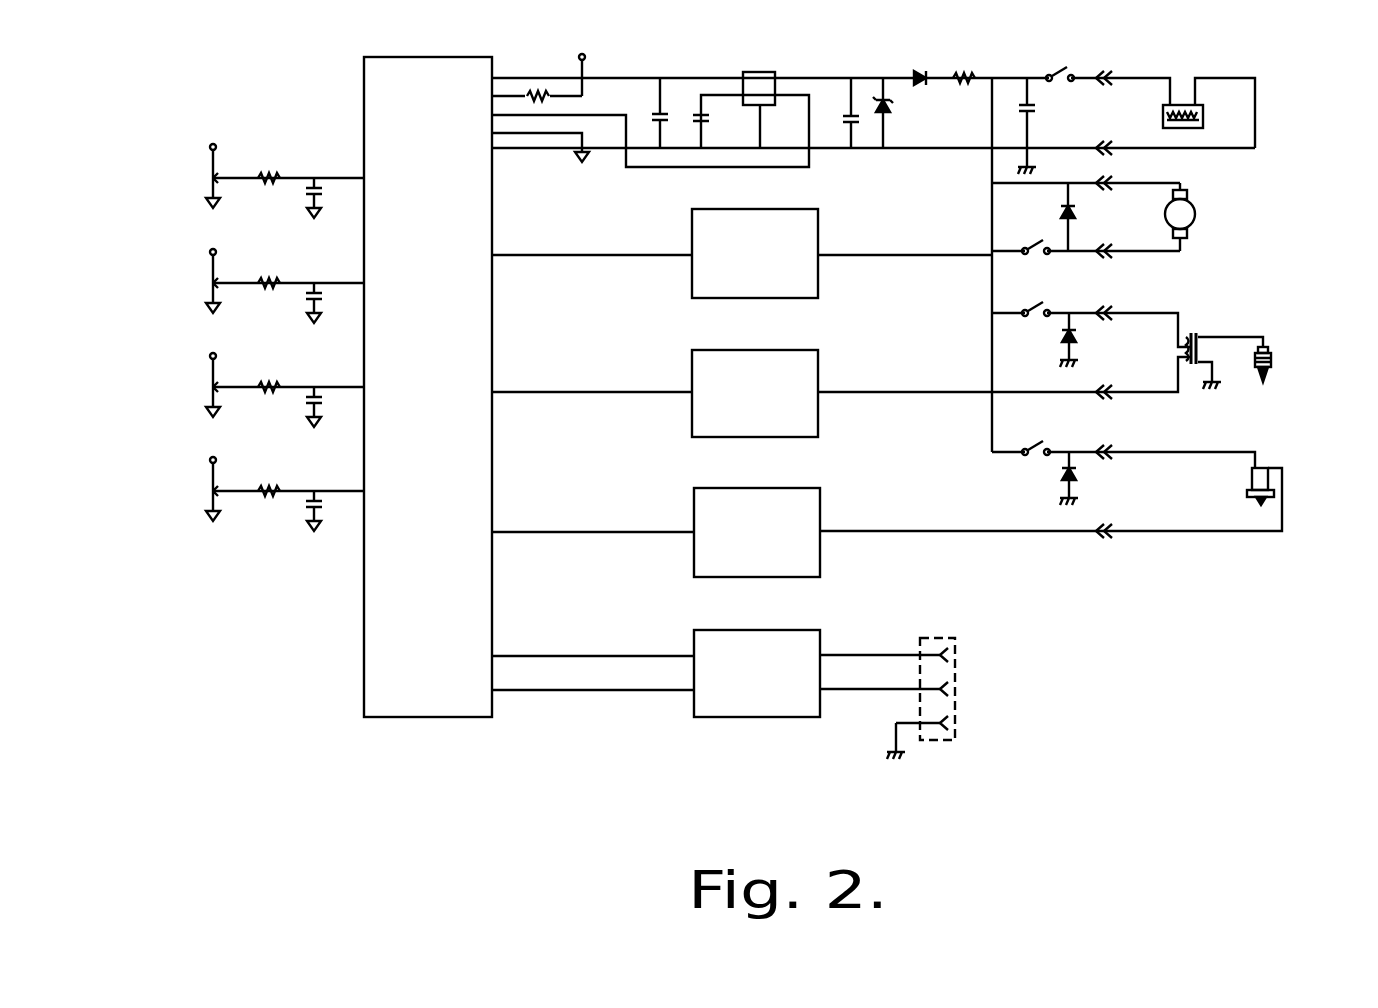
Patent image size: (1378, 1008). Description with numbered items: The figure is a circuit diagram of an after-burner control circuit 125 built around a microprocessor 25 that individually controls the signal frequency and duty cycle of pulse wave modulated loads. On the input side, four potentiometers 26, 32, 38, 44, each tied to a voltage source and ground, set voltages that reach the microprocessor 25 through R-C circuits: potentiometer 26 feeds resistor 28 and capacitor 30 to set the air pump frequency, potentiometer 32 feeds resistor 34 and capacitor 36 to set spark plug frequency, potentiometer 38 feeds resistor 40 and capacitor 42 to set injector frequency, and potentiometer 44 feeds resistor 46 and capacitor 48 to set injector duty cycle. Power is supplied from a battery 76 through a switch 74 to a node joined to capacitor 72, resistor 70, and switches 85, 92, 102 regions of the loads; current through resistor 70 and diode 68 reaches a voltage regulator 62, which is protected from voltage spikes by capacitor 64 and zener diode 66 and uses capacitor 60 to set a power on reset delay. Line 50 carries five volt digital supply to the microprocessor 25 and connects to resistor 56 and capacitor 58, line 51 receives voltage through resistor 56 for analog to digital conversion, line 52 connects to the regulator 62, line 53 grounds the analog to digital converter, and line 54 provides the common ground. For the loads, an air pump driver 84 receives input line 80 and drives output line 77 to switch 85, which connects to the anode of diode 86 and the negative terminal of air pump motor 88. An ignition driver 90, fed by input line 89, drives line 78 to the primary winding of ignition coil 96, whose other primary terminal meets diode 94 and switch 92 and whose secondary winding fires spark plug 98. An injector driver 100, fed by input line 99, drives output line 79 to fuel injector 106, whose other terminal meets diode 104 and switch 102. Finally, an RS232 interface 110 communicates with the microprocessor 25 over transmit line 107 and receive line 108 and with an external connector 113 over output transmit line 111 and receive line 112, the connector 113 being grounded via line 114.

The microprocessor 25 is at (364, 73).
The potentiometer 26 is at (213, 178).
The resistor 28 is at (268, 178).
The capacitor 30 is at (326, 192).
The potentiometer 32 is at (213, 283).
The resistor 34 is at (268, 283).
The capacitor 36 is at (326, 298).
The potentiometer 38 is at (213, 387).
The resistor 40 is at (268, 387).
The capacitor 42 is at (326, 402).
The potentiometer 44 is at (213, 491).
The resistor 46 is at (268, 491).
The capacitor 48 is at (331, 508).
The line 50 is at (508, 78).
The line 51 is at (492, 96).
The line 52 is at (492, 115).
The line 53 is at (492, 133).
The line 54 is at (500, 148).
The resistor 56 is at (562, 75).
The capacitor 58 is at (654, 118).
The capacitor 60 is at (708, 120).
The voltage regulator 62 is at (750, 72).
The capacitor 64 is at (848, 122).
The zener diode 66 is at (890, 112).
The diode 68 is at (920, 72).
The resistor 70 is at (966, 82).
The capacitor 72 is at (1032, 108).
The switch 74 is at (1054, 81).
The battery 76 is at (1188, 128).
The output line 77 is at (845, 255).
The line 78 is at (845, 392).
The output line 79 is at (845, 531).
The input line 80 is at (506, 255).
The air pump driver 84 is at (692, 234).
The switch 85 is at (1027, 249).
The diode 86 is at (1075, 212).
The air pump motor 88 is at (1195, 214).
The input line 89 is at (506, 392).
The ignition driver 90 is at (692, 370).
The switch 92 is at (1032, 311).
The diode 94 is at (1076, 338).
The ignition coil 96 is at (1192, 340).
The spark plug 98 is at (1273, 362).
The input line 99 is at (506, 532).
The injector driver 100 is at (694, 512).
The switch 102 is at (1037, 449).
The diode 104 is at (1078, 472).
The fuel injector 106 is at (1268, 476).
The transmit line 107 is at (509, 656).
The receive line 108 is at (510, 690).
The RS232 interface 110 is at (692, 634).
The output transmit line 111 is at (845, 655).
The receive line 112 is at (870, 690).
The external connector 113 is at (950, 640).
The line 114 is at (892, 738).
The after-burner control circuit 125 is at (1294, 124).